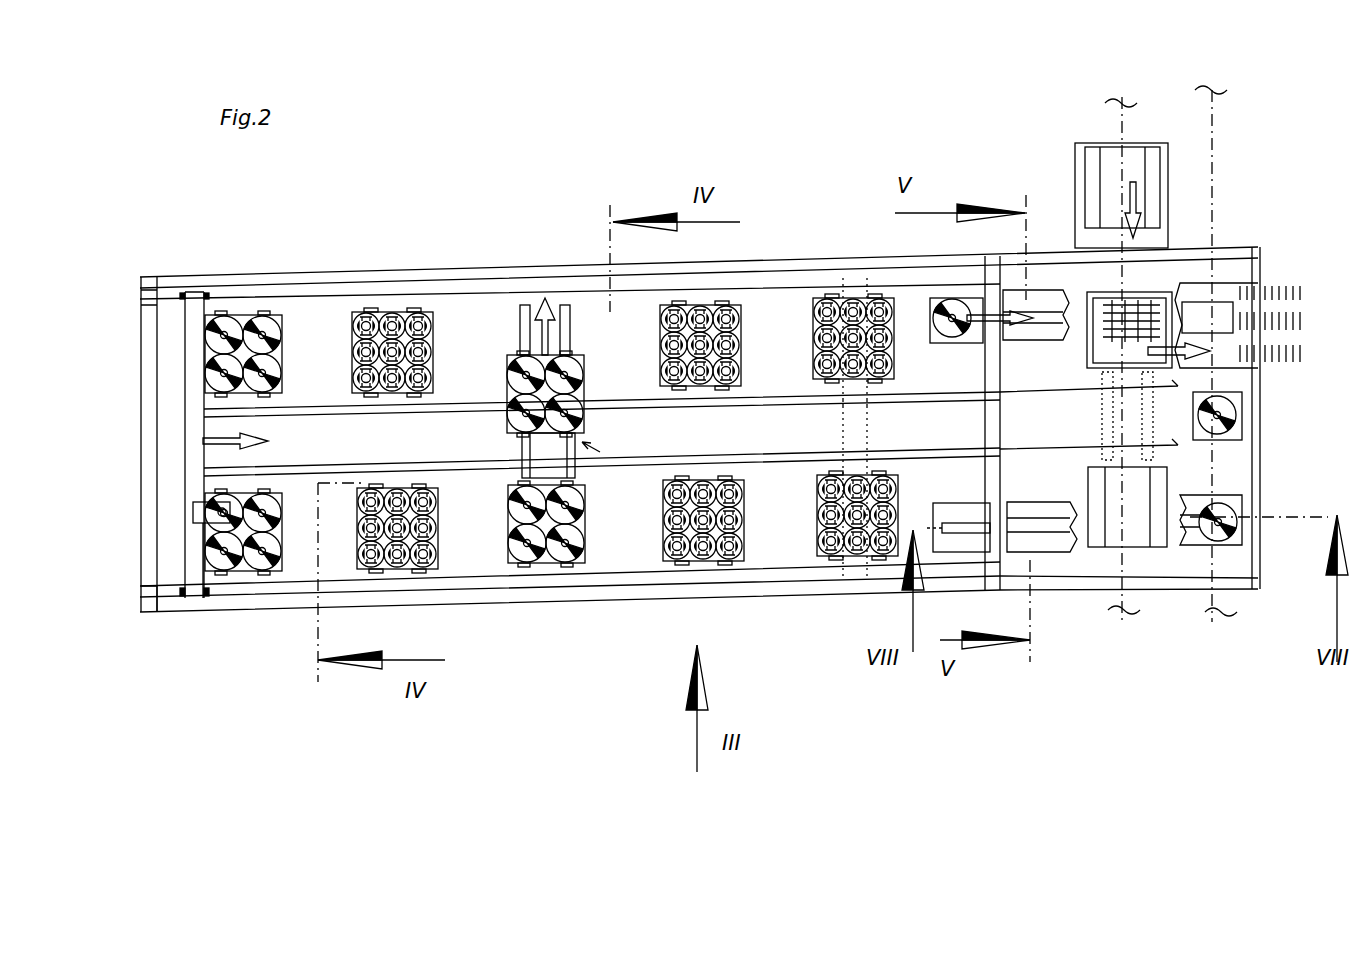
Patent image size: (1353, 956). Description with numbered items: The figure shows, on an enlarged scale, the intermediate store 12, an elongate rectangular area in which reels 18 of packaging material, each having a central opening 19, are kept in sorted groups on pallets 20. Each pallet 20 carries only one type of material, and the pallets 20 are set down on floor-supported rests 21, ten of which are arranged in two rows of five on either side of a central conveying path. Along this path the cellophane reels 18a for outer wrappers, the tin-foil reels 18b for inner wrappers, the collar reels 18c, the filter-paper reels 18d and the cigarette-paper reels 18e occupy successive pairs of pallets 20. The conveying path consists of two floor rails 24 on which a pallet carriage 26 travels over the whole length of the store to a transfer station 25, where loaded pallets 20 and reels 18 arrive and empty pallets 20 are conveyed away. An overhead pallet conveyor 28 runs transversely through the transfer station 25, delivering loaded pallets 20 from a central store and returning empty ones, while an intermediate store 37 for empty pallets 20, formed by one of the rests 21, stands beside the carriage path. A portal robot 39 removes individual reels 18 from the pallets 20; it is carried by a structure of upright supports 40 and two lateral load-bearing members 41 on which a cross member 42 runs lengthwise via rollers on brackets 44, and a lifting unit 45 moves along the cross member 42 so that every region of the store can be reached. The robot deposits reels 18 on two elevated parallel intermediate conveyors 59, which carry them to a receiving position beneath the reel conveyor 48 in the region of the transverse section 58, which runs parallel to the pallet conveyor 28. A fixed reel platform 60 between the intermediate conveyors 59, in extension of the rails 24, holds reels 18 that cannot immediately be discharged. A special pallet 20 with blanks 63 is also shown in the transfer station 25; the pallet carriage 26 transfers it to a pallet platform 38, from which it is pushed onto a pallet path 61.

The intermediate store 12 is at (526, 151).
The reel 18 is at (935, 300).
The cellophane reel 18a is at (880, 310).
The tin-foil reel 18b is at (740, 330).
The collar reel 18c is at (540, 567).
The filter-paper reel 18d is at (393, 326).
The cigarette-paper reel 18e is at (262, 333).
The central opening 19 is at (1222, 522).
The pallet 20 is at (352, 335).
The rest 21 is at (418, 325).
The floor rail 24 is at (462, 412).
The transfer station 25 is at (1177, 78).
The pallet carriage 26 is at (630, 575).
The pallet conveyor 28 is at (1120, 128).
The intermediate store for empty pallets 37 is at (1096, 571).
The pallet platform 38 is at (1158, 127).
The portal robot 39 is at (160, 606).
The upright support 40 is at (149, 277).
The lateral load-bearing member 41 is at (486, 268).
The cross member 42 is at (197, 300).
The bracket 44 is at (547, 300).
The lifting unit 45 is at (203, 598).
The reel conveyor 48 is at (1214, 118).
The transverse section 58 is at (1261, 532).
The intermediate conveyor 59 is at (1055, 278).
The reel platform 60 is at (1242, 432).
The pallet path 61 is at (1296, 385).
The blanks 63 is at (1146, 322).